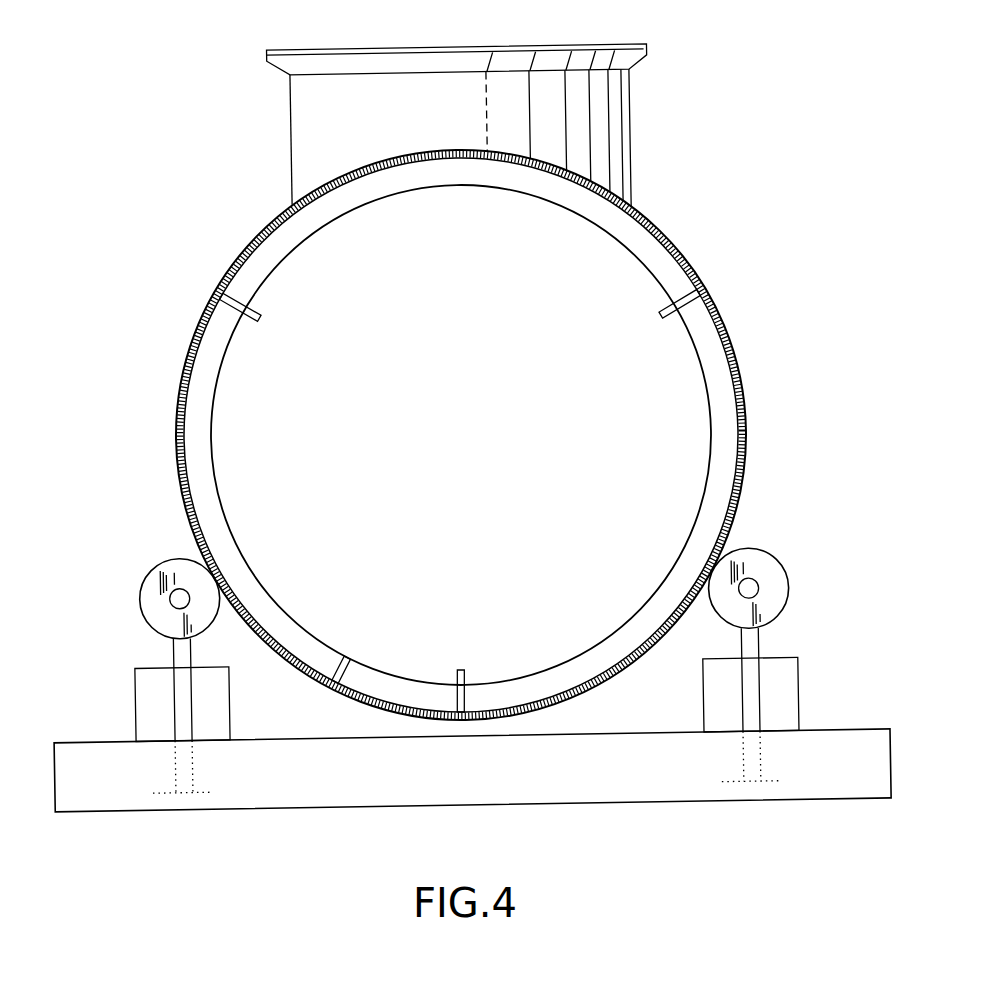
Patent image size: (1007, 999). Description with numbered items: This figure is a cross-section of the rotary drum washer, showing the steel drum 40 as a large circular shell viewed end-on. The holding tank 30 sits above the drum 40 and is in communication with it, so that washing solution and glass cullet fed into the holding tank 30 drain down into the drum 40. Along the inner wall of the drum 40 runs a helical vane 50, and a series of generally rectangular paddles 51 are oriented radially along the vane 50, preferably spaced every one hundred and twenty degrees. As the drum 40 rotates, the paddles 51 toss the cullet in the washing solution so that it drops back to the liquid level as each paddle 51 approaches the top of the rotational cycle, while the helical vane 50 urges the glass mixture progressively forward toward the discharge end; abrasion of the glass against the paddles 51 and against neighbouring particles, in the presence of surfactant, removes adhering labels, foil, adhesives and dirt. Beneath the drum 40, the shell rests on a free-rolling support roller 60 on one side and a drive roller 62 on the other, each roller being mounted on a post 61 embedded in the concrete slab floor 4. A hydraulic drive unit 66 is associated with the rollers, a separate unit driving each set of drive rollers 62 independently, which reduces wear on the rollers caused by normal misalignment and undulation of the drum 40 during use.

The concrete slab floor 4 is at (282, 792).
The holding tank 30 is at (628, 105).
The drum 40 is at (668, 233).
The helical vane 50 is at (723, 387).
The paddles 51 is at (261, 317).
The support rollers 60 is at (139, 594).
The posts 61 is at (170, 698).
The drive rollers 62 is at (782, 579).
The hydraulic drive unit 66 is at (225, 714).